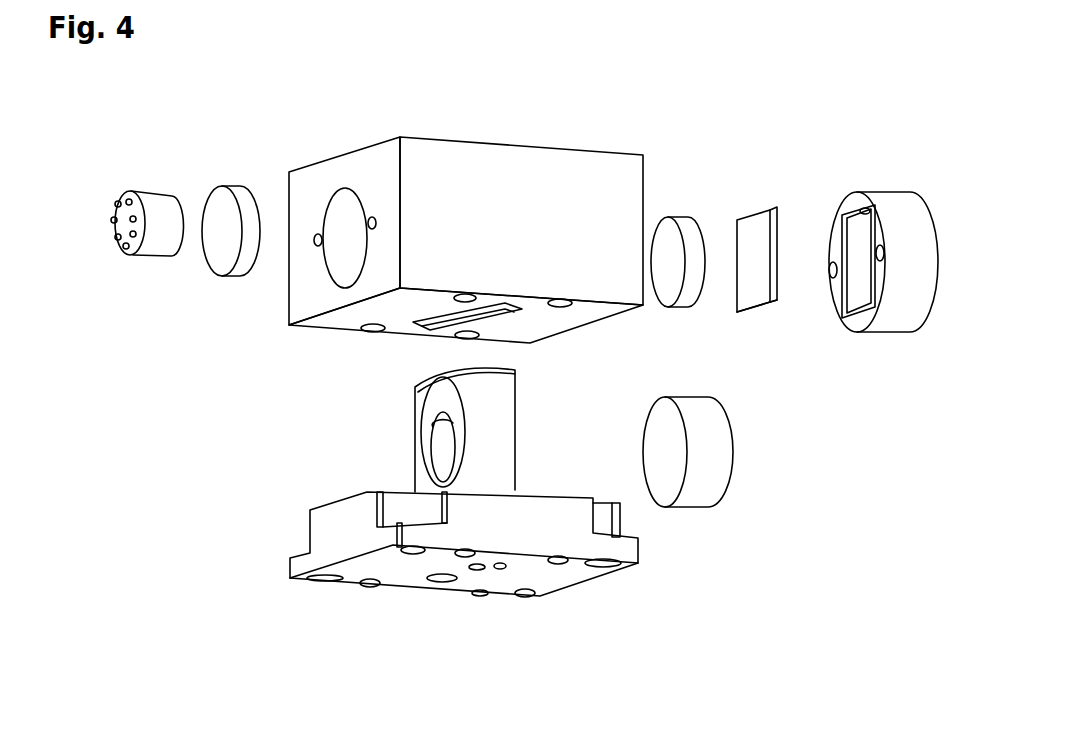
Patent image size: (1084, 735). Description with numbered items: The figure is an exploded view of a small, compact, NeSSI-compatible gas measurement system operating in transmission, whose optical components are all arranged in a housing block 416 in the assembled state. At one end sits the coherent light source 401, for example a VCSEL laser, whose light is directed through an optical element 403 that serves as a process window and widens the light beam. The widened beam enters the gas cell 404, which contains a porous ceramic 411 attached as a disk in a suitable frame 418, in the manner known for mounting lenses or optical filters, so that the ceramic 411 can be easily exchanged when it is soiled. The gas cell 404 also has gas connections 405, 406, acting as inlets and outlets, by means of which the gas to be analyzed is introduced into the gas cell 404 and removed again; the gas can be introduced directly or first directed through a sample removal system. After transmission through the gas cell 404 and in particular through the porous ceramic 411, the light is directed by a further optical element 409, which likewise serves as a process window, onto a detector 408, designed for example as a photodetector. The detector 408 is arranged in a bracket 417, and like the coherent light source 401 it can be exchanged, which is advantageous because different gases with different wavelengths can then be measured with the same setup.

The coherent light source 401 is at (172, 213).
The optical element 403 is at (226, 208).
The housing block 416 is at (457, 192).
The further optical element 409 is at (695, 242).
The detector 408 is at (760, 252).
The bracket 417 is at (888, 312).
The frame 418 is at (525, 500).
The gas cell 404 is at (432, 427).
The gas connection 405 is at (464, 570).
The gas connection 406 is at (562, 605).
The porous ceramic 411 is at (693, 432).